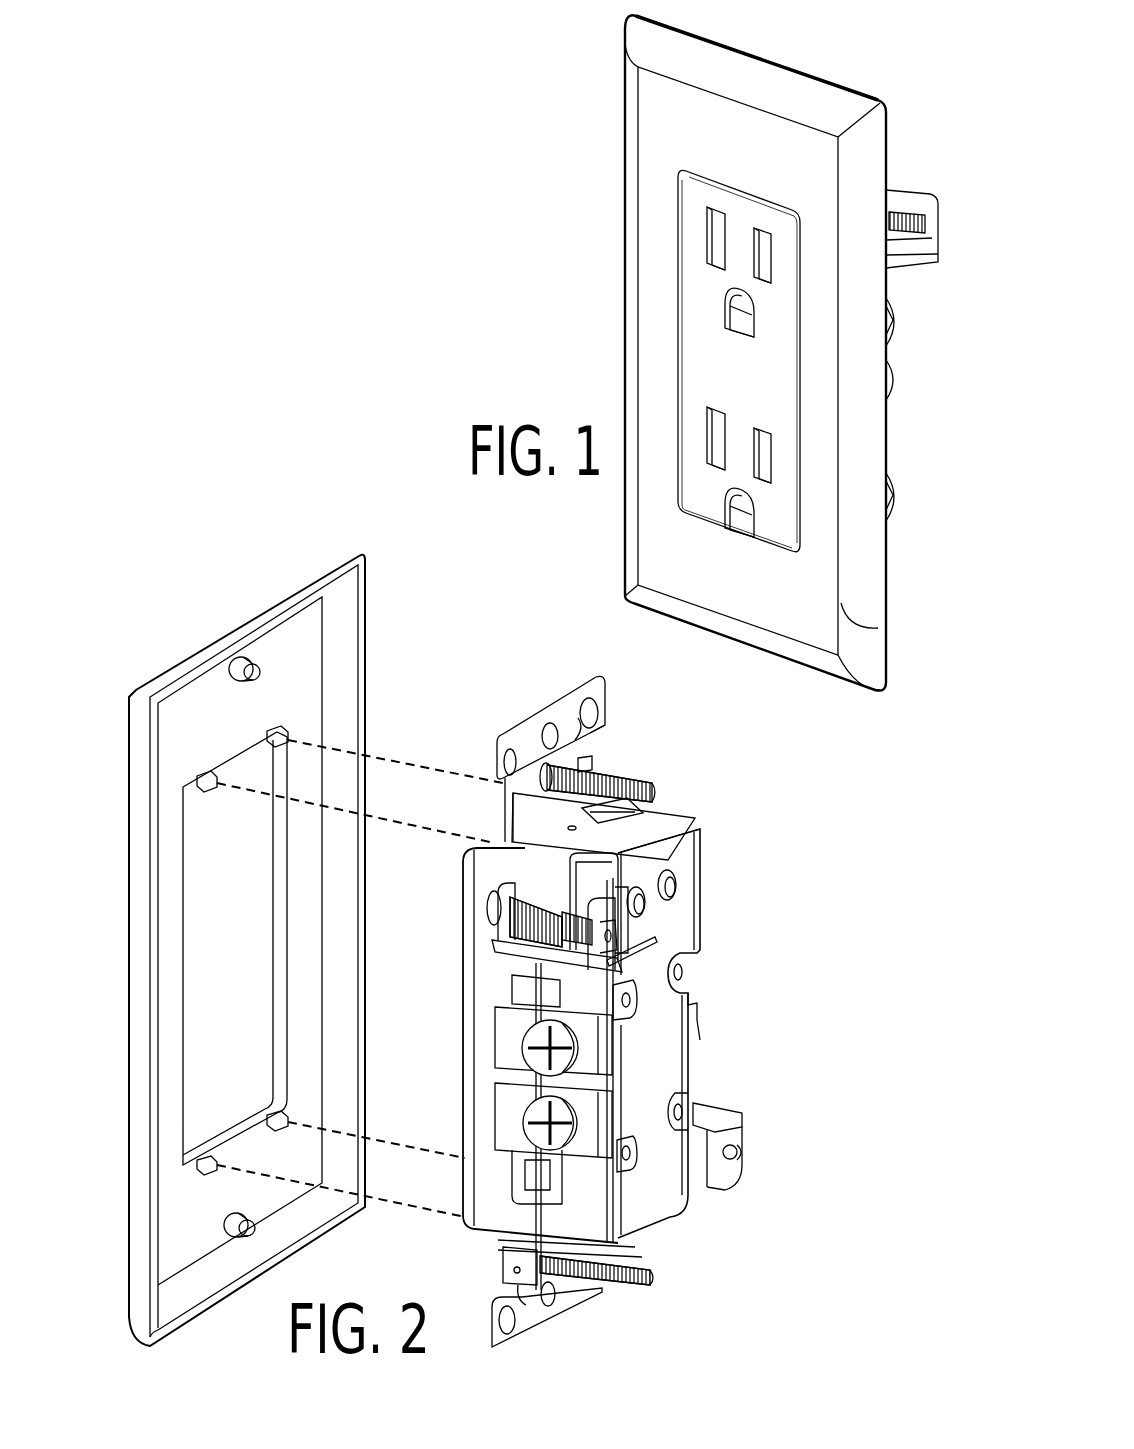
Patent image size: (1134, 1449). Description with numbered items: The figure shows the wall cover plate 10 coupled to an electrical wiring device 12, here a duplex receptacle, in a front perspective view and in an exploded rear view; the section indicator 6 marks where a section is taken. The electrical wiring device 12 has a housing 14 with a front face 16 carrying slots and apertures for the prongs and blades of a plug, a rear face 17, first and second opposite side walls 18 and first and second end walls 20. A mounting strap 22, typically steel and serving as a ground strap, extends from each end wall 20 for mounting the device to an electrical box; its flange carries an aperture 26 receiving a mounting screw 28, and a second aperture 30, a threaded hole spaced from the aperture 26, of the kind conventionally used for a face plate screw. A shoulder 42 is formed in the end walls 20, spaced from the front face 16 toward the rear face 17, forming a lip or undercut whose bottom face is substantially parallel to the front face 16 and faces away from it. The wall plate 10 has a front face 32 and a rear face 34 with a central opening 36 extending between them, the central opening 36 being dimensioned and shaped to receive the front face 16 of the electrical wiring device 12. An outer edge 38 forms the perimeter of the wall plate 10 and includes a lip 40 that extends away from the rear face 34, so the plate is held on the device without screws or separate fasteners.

In FIG. 1, the section line 6- 6 is at (700, 23).
In FIG. 1, the wall cover plate 10 is at (895, 112).
In FIG. 2, the wall cover plate 10 is at (126, 760).
In FIG. 2, the electrical wiring device 12 is at (718, 812).
In FIG. 2, the housing 14 is at (682, 993).
In FIG. 1, the front face 16 is at (703, 357).
In FIG. 2, the rear face 17 is at (678, 908).
In FIG. 2, the side walls 18 is at (478, 1200).
In FIG. 2, the end walls 20 is at (500, 820).
In FIG. 2, the mounting strap 22 is at (608, 702).
In FIG. 2, the aperture 26 is at (590, 766).
In FIG. 2, the mounting screw 28 is at (638, 778).
In FIG. 2, the second aperture 30 is at (563, 717).
In FIG. 1, the front face 32 is at (660, 130).
In FIG. 2, the rear face 34 is at (183, 720).
In FIG. 2, the central opening 36 is at (216, 999).
In FIG. 1, the outer edge 38 is at (870, 618).
In FIG. 1, the lip 40 is at (873, 558).
In FIG. 2, the lip 40 is at (367, 713).
In FIG. 2, the shoulder 42 is at (497, 870).